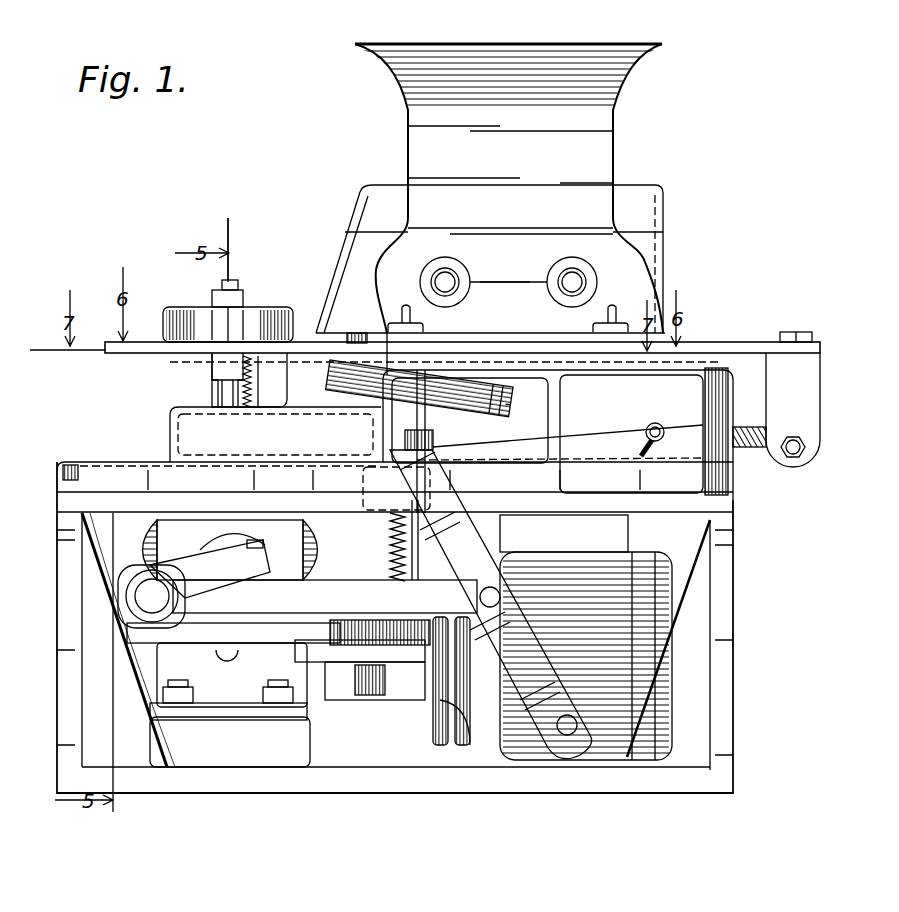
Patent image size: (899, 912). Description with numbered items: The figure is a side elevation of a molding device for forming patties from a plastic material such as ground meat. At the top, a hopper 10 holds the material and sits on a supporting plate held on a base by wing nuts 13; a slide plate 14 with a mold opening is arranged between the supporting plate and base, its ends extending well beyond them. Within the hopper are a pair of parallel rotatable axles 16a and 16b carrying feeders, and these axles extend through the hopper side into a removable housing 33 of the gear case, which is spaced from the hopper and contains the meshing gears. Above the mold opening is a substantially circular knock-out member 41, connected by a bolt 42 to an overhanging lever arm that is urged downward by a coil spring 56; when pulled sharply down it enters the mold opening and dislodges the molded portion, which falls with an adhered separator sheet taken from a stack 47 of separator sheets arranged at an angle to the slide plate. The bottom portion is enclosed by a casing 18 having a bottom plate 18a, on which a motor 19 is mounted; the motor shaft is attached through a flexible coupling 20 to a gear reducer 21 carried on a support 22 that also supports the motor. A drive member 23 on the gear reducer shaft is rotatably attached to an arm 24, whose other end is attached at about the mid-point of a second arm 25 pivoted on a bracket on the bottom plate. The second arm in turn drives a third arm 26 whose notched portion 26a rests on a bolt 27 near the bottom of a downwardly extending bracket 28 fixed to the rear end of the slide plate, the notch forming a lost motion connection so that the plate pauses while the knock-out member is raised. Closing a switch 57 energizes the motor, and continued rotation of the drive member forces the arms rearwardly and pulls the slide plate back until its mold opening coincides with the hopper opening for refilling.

The hopper 10 is at (592, 140).
The removable housing 33 is at (657, 207).
The rotatable axle 16a is at (437, 276).
The rotatable axle 16b is at (582, 278).
The wing nuts 13 is at (398, 318).
The slide plate 14 is at (740, 346).
The bolt 42 is at (236, 290).
The knock-out member 41 is at (277, 308).
The coil spring 56 is at (250, 388).
The stack of separator sheets 47 is at (330, 381).
The downwardly extending bracket 28 is at (808, 378).
The bolt 27 is at (812, 447).
The notched portion 26a is at (757, 447).
The third arm 26 is at (740, 447).
The switch 57 is at (646, 440).
The casing 18 is at (724, 611).
The bottom plate 18a is at (396, 640).
The motor 19 is at (643, 560).
The drive member 23 is at (243, 562).
The arm 24 is at (347, 596).
The second arm 25 is at (455, 543).
The flexible coupling 20 is at (405, 666).
The gear reducer 21 is at (280, 668).
The support 22 is at (385, 767).